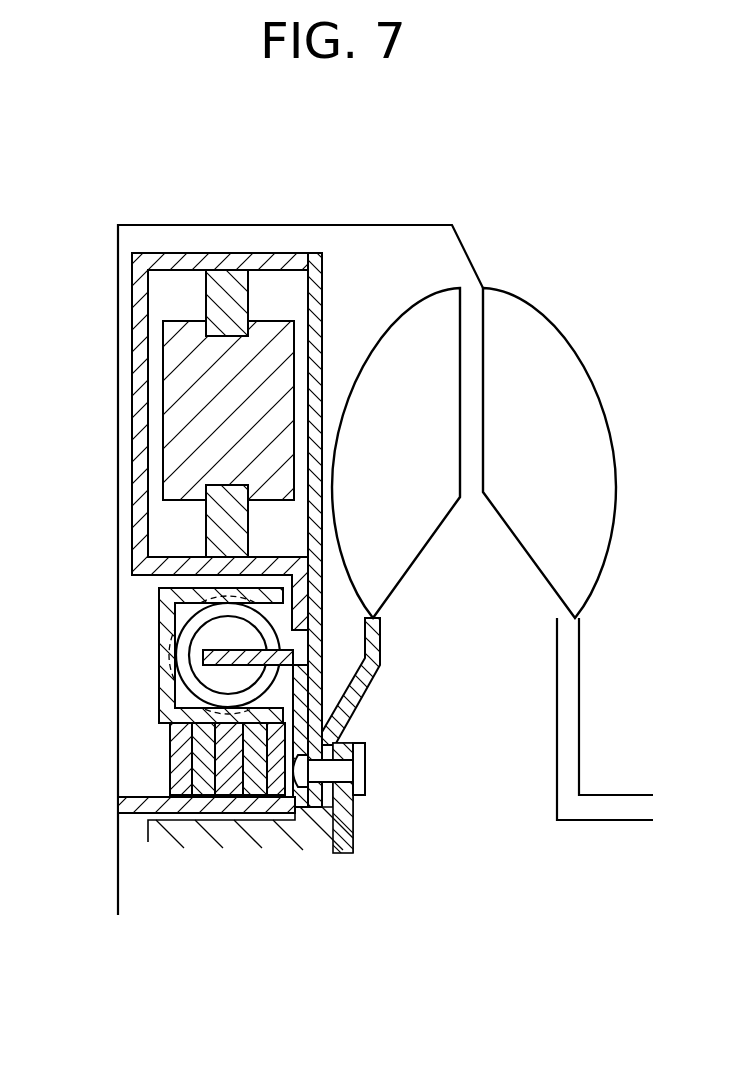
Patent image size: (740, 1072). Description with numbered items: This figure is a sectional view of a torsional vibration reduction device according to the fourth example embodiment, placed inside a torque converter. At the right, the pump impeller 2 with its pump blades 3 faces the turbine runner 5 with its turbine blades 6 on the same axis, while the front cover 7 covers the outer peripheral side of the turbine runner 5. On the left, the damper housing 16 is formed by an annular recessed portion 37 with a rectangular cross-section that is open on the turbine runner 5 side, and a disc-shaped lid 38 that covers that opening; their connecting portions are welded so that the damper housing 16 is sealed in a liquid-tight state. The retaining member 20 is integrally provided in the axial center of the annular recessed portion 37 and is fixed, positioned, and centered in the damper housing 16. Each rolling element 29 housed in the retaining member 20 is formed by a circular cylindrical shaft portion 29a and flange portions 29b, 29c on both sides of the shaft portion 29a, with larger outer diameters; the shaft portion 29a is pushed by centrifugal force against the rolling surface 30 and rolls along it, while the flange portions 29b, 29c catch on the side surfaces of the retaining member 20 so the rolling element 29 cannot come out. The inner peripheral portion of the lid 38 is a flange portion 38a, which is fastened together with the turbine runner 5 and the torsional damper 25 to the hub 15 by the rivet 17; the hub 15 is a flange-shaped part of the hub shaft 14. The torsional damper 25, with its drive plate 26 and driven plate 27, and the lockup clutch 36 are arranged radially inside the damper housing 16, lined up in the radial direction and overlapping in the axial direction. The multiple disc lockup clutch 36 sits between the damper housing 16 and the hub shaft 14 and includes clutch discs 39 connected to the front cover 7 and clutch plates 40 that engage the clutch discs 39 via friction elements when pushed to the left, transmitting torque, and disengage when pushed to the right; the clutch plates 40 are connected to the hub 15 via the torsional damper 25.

The pump impeller 2 is at (568, 544).
The pump blades 3 is at (570, 365).
The turbine runner 5 is at (440, 410).
The turbine blades 6 is at (442, 327).
The front cover 7 is at (118, 447).
The hub shaft 14 is at (173, 833).
The hub 15 is at (347, 808).
The damper housing 16 is at (146, 252).
The rivet 17 is at (360, 768).
The retaining member 20 is at (223, 290).
The torsional damper 25 is at (249, 661).
The drive plate 26 is at (160, 597).
The driven plate 27 is at (300, 707).
The rolling element 29 is at (254, 365).
The shaft portion 29a is at (237, 340).
The flange portion 29b is at (178, 330).
The flange portion 29c is at (322, 328).
The rolling surface 30 is at (218, 367).
The lockup clutch 36 is at (161, 795).
The annular recessed portion 37 is at (176, 262).
The lid 38 is at (322, 290).
The flange portion 38a is at (317, 665).
The clutch discs 39 is at (205, 778).
The clutch plates 40 is at (235, 778).